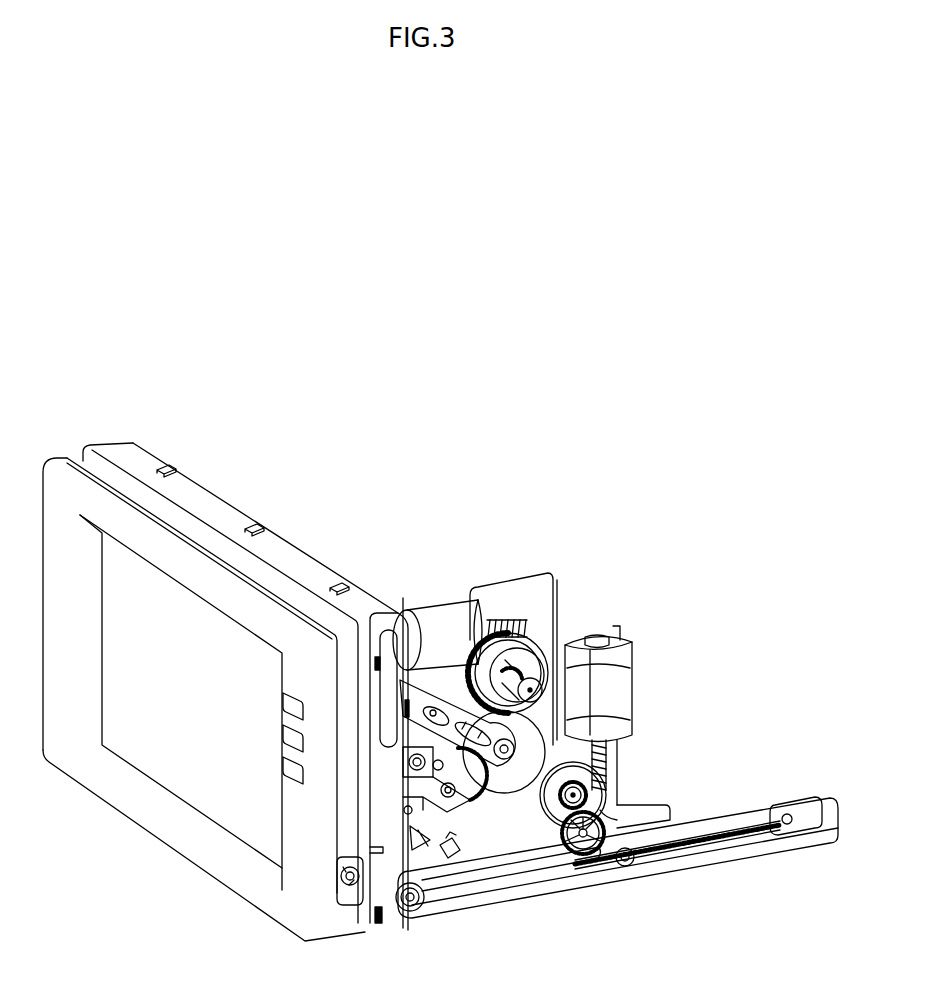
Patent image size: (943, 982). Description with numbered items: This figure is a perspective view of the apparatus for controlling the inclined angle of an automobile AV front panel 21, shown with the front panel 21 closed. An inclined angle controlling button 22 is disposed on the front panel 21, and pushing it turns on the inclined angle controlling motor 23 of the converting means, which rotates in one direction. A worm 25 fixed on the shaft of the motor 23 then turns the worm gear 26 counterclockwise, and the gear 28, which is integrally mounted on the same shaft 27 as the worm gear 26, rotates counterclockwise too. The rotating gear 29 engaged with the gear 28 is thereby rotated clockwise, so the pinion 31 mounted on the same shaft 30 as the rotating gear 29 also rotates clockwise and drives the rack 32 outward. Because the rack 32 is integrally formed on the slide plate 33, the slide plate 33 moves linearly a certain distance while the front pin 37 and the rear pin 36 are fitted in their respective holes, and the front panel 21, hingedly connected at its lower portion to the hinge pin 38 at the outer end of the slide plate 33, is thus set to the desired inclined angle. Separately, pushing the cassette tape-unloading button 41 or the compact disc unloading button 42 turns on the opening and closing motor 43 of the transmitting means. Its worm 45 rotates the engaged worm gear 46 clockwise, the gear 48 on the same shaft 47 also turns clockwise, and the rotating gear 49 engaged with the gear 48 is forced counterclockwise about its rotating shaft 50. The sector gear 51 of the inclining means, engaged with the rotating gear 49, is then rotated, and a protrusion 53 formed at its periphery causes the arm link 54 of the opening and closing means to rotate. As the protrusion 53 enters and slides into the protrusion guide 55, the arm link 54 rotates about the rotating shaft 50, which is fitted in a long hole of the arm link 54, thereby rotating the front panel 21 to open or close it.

The front panel 21 is at (62, 448).
The inclined angle controlling button 22 is at (288, 702).
The inclined angle controlling motor 23 is at (627, 690).
The worm 25 is at (603, 757).
The worm gear 26 is at (607, 780).
The shaft 27 is at (573, 805).
The gear 28 is at (548, 802).
The rotating gear 29 is at (655, 806).
The shaft 30 is at (594, 838).
The pinion 31 is at (575, 845).
The rack 32 is at (745, 825).
The slide plate 33 is at (801, 802).
The rear pin 36 is at (638, 860).
The front pin 37 is at (420, 905).
The hinge pin 38 is at (358, 884).
The cassette tape-unloading button 41 is at (288, 733).
The compact disc unloading button 42 is at (288, 772).
The opening and closing motor 43 is at (440, 607).
The worm 45 is at (517, 632).
The worm gear 46 is at (522, 660).
The shaft 47 is at (600, 668).
The gear 48 is at (530, 672).
The rotating gear 49 is at (600, 718).
The rotating shaft 50 is at (505, 758).
The sector gear 51 is at (403, 802).
The protrusion 53 is at (403, 782).
The arm link 54 is at (457, 712).
The protrusion guide 55 is at (412, 712).